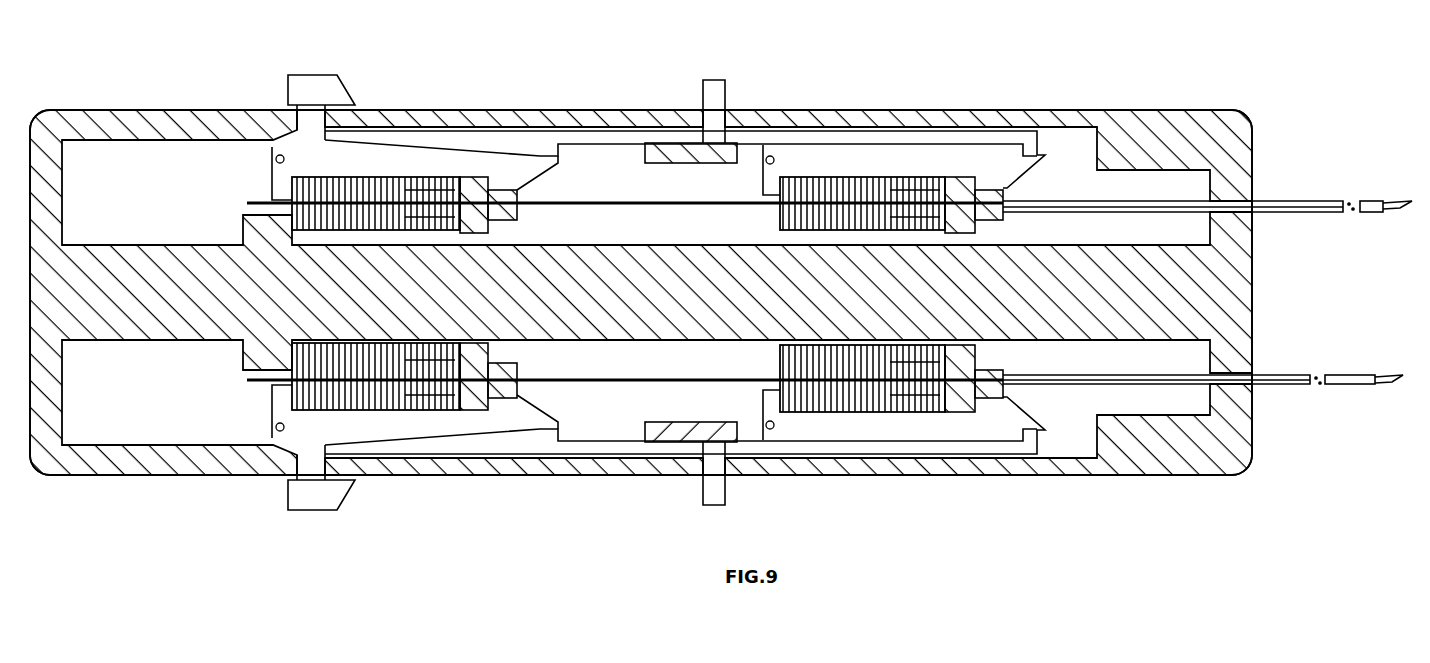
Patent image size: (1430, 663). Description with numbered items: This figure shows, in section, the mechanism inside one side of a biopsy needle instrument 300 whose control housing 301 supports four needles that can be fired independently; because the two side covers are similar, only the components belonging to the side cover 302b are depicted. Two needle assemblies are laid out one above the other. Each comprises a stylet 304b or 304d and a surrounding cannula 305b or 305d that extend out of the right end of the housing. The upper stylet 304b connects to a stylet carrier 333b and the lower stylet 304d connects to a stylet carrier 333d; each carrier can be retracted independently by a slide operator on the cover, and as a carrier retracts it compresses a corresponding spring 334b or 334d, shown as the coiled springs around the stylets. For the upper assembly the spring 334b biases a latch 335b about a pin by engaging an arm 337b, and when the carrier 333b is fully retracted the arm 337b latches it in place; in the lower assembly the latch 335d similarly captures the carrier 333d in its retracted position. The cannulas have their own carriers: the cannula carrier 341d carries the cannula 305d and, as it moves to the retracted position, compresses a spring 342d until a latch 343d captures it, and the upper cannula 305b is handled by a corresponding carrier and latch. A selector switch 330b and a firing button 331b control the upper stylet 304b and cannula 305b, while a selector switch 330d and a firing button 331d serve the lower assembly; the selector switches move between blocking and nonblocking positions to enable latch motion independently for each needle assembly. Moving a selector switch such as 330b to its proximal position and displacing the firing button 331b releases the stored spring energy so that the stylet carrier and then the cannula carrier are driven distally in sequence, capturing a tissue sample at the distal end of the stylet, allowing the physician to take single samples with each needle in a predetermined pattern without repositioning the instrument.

The biopsy needle instrument 300 is at (875, 93).
The control housing 301 is at (400, 108).
The side cover 302b is at (212, 110).
The stylet 304b is at (678, 203).
The stylet 304d is at (658, 381).
The cannula 305b is at (1294, 200).
The cannula 305d is at (1135, 202).
The selector switch 330b is at (722, 82).
The selector switch 330d is at (713, 503).
The firing button 331b is at (337, 75).
The firing button 331d is at (328, 510).
The stylet carrier 333b is at (276, 160).
The stylet carrier 333d is at (500, 370).
The spring 334b is at (250, 203).
The spring 334d is at (434, 410).
The latch 335b is at (366, 147).
The latch 335d is at (515, 425).
The arm 337b is at (503, 185).
The cannula carrier 341d is at (988, 216).
The spring 342d is at (755, 210).
The latch 343d is at (885, 162).